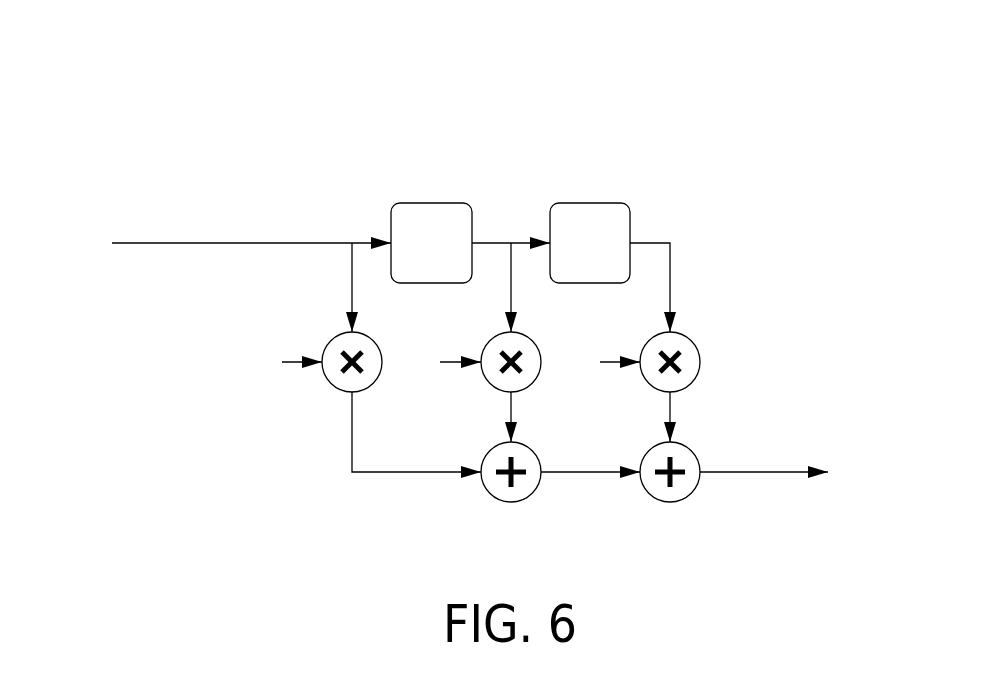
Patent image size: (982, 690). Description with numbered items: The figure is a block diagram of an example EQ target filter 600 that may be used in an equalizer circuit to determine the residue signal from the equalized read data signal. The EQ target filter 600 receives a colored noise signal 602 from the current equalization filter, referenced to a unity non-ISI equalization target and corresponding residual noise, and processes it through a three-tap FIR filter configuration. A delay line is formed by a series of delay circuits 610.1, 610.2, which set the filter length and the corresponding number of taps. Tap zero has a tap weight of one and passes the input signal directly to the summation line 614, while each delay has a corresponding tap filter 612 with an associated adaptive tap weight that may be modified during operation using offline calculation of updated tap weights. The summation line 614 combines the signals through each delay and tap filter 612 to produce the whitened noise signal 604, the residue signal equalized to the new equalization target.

The EQ target filter 600 is at (127, 122).
The colored noise signal 602 is at (248, 210).
The whitened noise signal 604 is at (752, 508).
The delay circuit 610.1 is at (438, 202).
The delay circuit 610.2 is at (590, 202).
The tap filter 612 is at (190, 374).
The summation line 614 is at (325, 470).